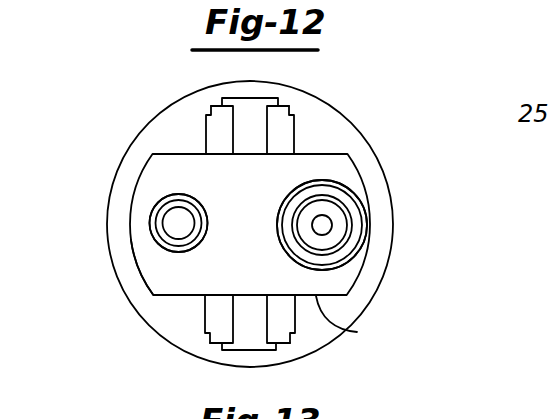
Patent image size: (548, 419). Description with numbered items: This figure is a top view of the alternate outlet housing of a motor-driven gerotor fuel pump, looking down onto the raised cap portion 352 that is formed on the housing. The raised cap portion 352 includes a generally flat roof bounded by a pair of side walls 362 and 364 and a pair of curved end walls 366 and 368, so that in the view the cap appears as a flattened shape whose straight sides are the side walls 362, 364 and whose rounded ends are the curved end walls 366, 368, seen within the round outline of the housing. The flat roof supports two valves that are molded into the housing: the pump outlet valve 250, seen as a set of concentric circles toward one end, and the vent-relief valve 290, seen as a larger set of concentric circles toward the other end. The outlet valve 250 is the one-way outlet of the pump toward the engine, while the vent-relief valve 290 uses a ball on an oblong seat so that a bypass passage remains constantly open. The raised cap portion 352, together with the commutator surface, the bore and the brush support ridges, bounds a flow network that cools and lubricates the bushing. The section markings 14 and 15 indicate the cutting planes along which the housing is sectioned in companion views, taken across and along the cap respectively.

The section line 14- 14 is at (253, 57).
The section line 15- 15 is at (88, 263).
The pump outlet valve 250 is at (166, 193).
The vent-relief valve 290 is at (354, 190).
The raised cap portion 352 is at (158, 295).
The side wall 362 is at (326, 152).
The side wall 364 is at (357, 332).
The curved end wall 366 is at (140, 177).
The curved end wall 368 is at (365, 203).